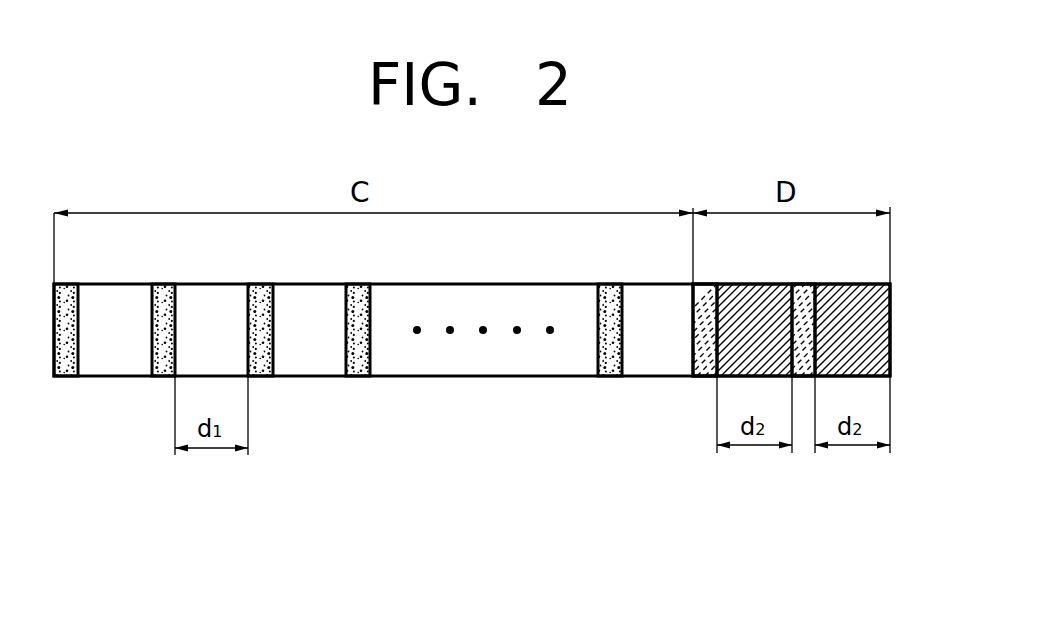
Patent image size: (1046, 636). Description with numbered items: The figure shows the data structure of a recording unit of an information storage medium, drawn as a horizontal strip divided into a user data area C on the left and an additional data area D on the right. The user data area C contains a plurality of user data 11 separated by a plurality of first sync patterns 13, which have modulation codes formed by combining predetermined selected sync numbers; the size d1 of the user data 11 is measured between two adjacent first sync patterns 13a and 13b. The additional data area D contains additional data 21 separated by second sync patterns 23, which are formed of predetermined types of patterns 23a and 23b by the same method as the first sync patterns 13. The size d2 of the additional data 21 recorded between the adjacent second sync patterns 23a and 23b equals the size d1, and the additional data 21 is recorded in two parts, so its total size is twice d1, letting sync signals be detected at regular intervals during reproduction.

The user data 11 is at (310, 377).
The first sync patterns 13 is at (63, 377).
The first sync pattern 13a is at (162, 377).
The first sync pattern 13b is at (262, 377).
The additional data 21 is at (890, 333).
The second sync patterns 23 is at (803, 426).
The second sync pattern 23a is at (702, 377).
The second sync pattern 23b is at (800, 377).